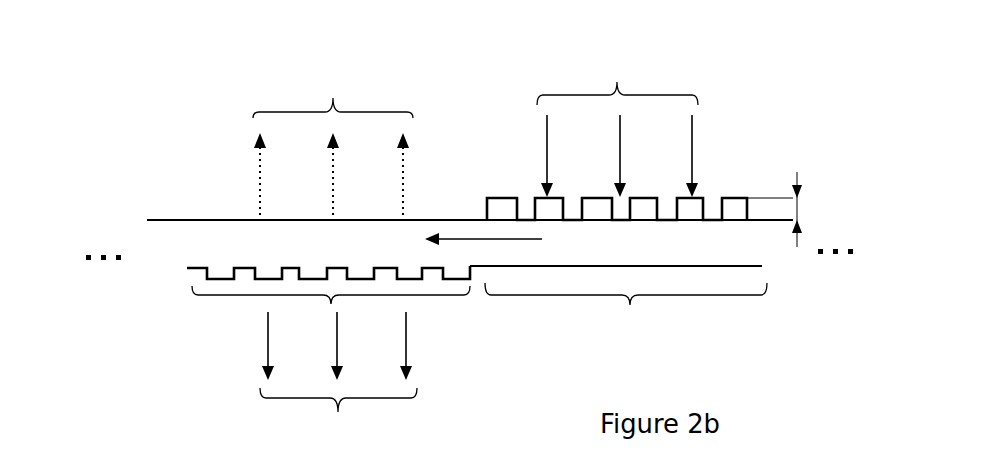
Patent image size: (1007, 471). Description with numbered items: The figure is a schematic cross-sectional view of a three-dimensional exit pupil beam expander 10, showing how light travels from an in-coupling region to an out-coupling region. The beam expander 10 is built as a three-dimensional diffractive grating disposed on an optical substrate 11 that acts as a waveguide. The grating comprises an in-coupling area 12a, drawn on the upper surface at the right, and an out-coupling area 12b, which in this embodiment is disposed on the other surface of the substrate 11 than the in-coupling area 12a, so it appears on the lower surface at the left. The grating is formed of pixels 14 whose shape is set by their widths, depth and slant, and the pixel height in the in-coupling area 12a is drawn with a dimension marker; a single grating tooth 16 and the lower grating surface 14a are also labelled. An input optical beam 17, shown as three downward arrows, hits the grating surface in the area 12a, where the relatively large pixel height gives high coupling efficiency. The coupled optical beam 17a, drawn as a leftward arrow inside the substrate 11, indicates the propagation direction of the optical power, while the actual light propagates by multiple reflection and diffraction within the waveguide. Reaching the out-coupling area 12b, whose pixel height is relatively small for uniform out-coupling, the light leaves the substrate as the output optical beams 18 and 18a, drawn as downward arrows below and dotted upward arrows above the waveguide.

The 3D beam expander 10 is at (457, 100).
The optical substrate 11 is at (208, 237).
The in-coupling area 12a is at (693, 292).
The out-coupling area 12b is at (253, 302).
The pixels 14 is at (218, 210).
The lower waveguide surface 14a is at (220, 281).
The grating tooth 16 is at (728, 193).
The input optical beam 17 is at (545, 158).
The coupled optical beam 17a is at (507, 239).
The output optical beam 18 is at (407, 328).
The output optical beam 18a is at (257, 147).